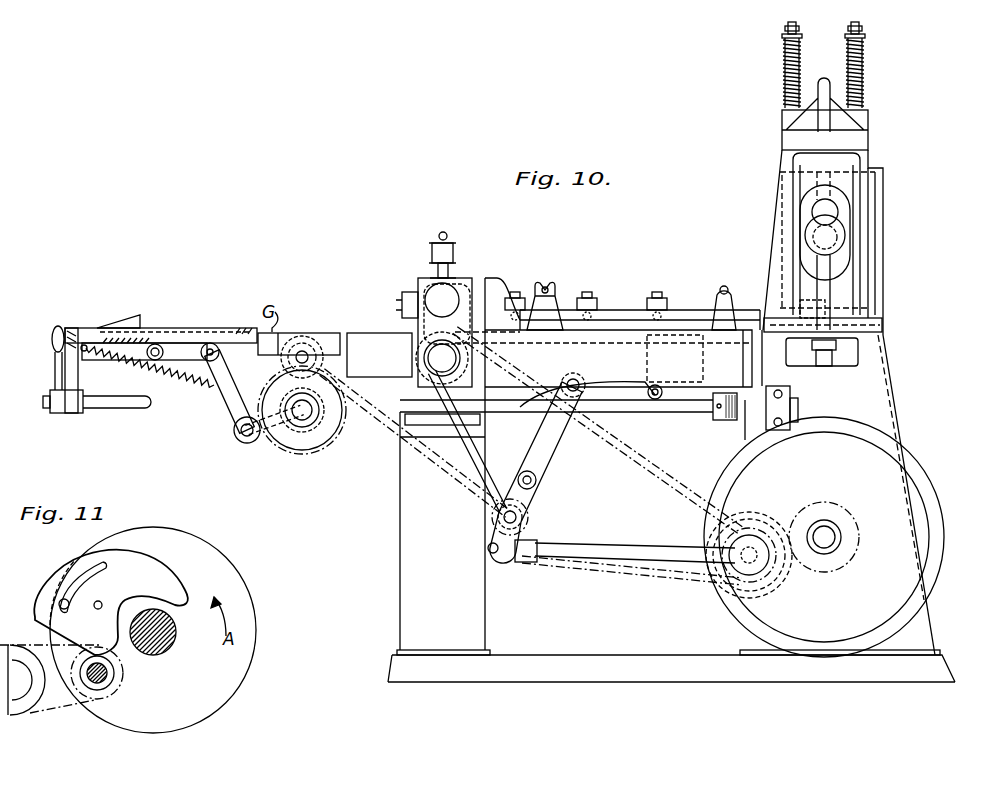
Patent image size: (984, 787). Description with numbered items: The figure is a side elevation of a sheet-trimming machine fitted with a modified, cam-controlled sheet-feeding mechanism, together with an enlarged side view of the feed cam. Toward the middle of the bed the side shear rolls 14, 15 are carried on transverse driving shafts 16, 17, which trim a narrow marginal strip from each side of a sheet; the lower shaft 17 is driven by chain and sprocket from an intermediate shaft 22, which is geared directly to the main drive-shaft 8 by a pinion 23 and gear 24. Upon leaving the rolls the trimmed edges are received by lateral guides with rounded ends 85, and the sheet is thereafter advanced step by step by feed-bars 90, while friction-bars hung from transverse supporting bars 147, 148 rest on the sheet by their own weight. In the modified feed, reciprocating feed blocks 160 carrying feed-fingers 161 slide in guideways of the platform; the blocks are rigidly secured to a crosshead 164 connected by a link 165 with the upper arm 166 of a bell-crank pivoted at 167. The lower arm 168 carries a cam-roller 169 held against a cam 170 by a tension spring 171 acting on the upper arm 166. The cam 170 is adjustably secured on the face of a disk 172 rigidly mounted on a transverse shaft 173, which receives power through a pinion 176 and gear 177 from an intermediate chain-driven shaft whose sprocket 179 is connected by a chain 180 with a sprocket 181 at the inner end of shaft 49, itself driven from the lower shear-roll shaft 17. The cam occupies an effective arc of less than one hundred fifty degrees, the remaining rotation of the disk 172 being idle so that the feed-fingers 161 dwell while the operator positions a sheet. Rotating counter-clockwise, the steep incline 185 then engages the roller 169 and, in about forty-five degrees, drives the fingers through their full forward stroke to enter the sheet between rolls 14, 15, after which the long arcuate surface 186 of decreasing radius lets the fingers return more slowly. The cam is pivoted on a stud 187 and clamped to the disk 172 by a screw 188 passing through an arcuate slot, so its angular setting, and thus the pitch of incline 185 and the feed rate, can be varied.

In FIG. 10, the main drive-shaft 8 is at (824, 339).
In FIG. 10, the side shear roll 14 is at (452, 280).
In FIG. 10, the side shear roll 15 is at (598, 430).
In FIG. 10, the transverse driving shaft 16 is at (442, 300).
In FIG. 10, the transverse driving shaft 17 is at (442, 358).
In FIG. 10, the intermediate shaft 22 is at (778, 585).
In FIG. 10, the pinion 23 is at (768, 520).
In FIG. 10, the gear 24 is at (835, 516).
In FIG. 10, the intermediate shaft 49 is at (490, 528).
In FIG. 10, the rounded ends 85 is at (632, 318).
In FIG. 10, the feed-bars 90 is at (493, 336).
In FIG. 10, the transverse supporting bar 147 is at (726, 286).
In FIG. 10, the transverse supporting bar 148 is at (548, 288).
In FIG. 10, the feed block 160 is at (150, 328).
In FIG. 10, the feed-fingers 161 is at (125, 322).
In FIG. 10, the crosshead 164 is at (128, 350).
In FIG. 10, the link 165 is at (185, 360).
In FIG. 10, the upper arm 166 is at (222, 405).
In FIG. 10, the bell-crank pivot 167 is at (245, 443).
In FIG. 11, the bell-crank pivot 167 is at (25, 708).
In FIG. 10, the lower arm 168 is at (295, 452).
In FIG. 11, the lower arm 168 is at (58, 710).
In FIG. 10, the cam-roller 169 is at (312, 432).
In FIG. 11, the cam-roller 169 is at (110, 680).
In FIG. 10, the cam 170 is at (268, 400).
In FIG. 11, the cam 170 is at (130, 560).
In FIG. 10, the tension spring 171 is at (160, 362).
In FIG. 11, the disk 172 is at (153, 630).
In FIG. 10, the transverse shaft 173 is at (312, 414).
In FIG. 11, the transverse shaft 173 is at (174, 637).
In FIG. 10, the pinion 176 is at (306, 350).
In FIG. 10, the gear 177 is at (288, 448).
In FIG. 10, the sprocket 179 is at (303, 350).
In FIG. 10, the chain 180 is at (428, 488).
In FIG. 10, the sprocket 181 is at (530, 520).
In FIG. 11, the steep incline 185 is at (65, 637).
In FIG. 11, the arcuate cam surface 186 is at (62, 590).
In FIG. 11, the stud 187 is at (103, 601).
In FIG. 11, the screw 188 is at (58, 600).